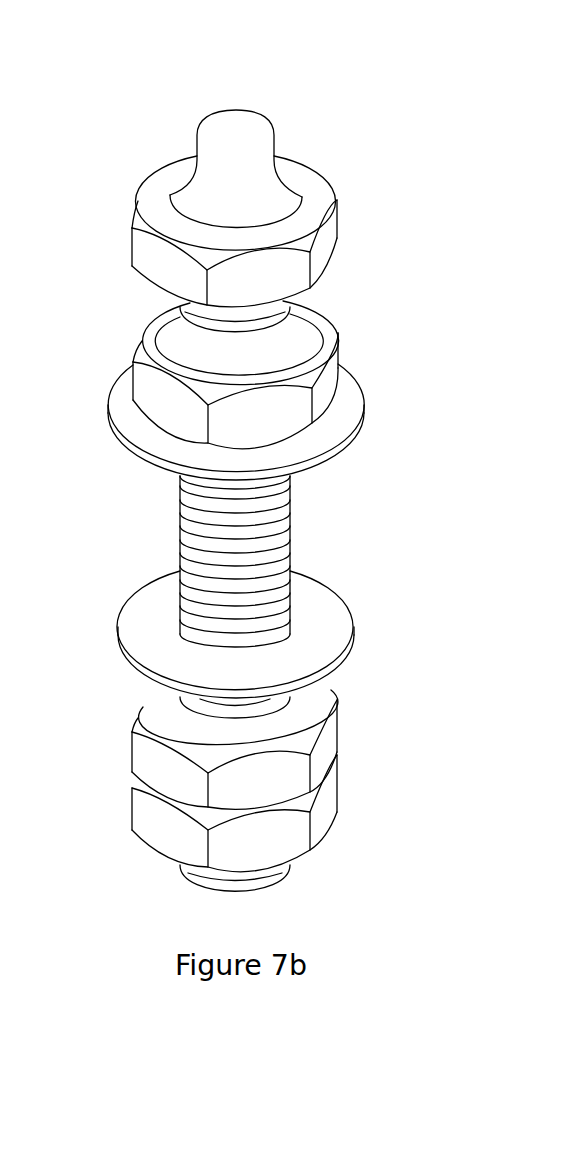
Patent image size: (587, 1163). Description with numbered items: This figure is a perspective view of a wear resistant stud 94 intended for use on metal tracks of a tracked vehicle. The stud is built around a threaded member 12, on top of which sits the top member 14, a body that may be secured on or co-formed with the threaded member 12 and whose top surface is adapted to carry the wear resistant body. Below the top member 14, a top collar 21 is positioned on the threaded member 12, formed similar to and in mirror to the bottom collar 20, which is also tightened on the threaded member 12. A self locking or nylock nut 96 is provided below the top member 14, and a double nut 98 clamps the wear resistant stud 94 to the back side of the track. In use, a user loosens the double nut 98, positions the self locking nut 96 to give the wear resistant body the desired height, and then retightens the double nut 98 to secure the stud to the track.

The wear resistant stud 94 is at (238, 62).
The top member 14 is at (337, 210).
The top collar 21 is at (357, 373).
The self locking nut 96 is at (133, 365).
The threaded member 12 is at (289, 537).
The bottom collar 20 is at (353, 623).
The double nut 98 is at (338, 717).